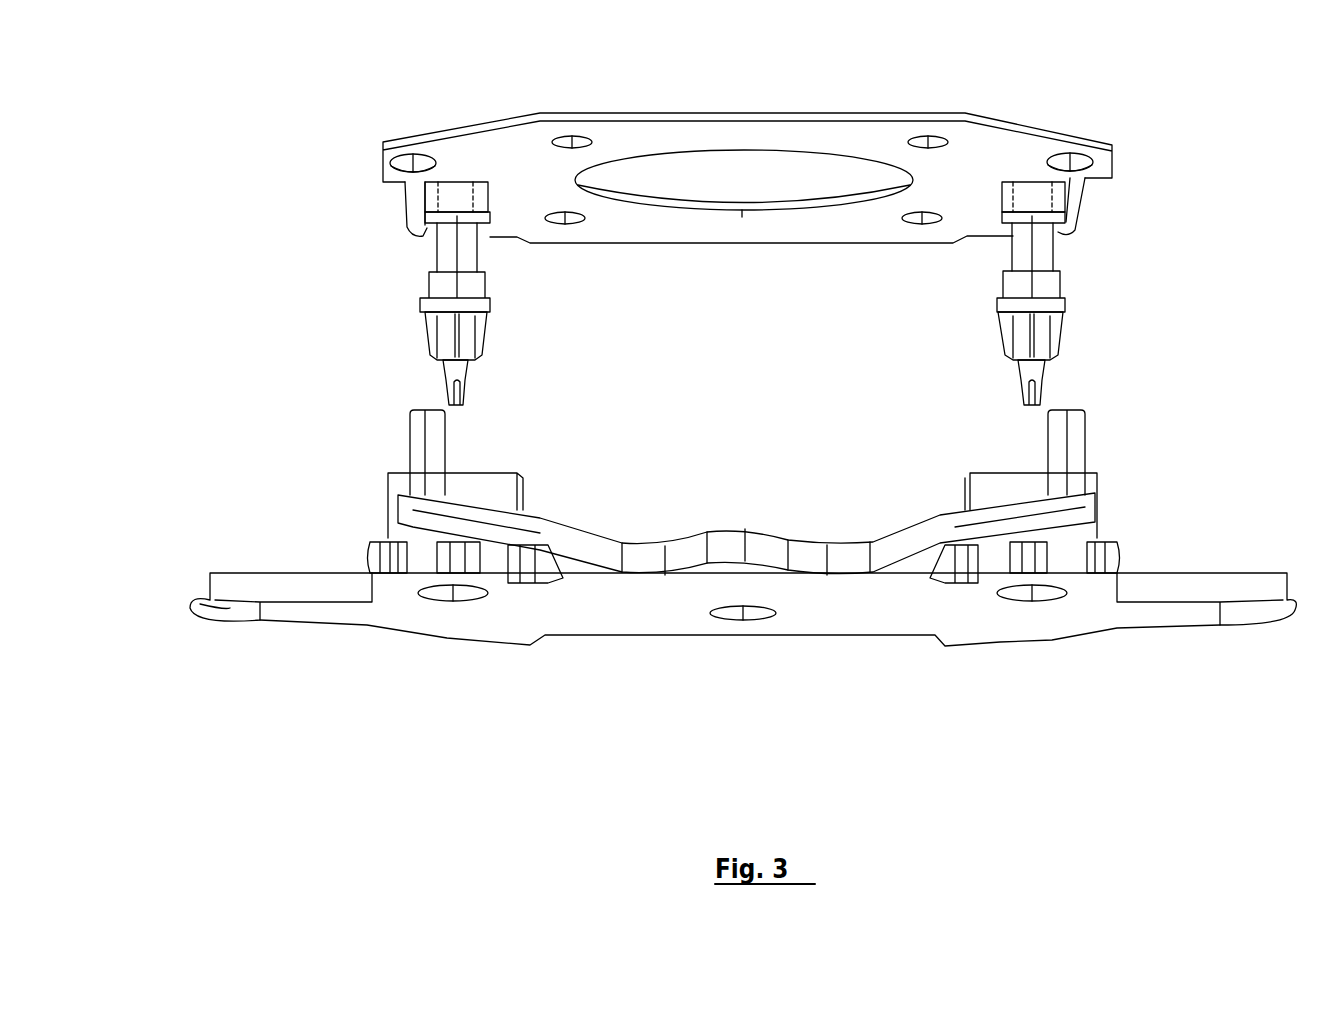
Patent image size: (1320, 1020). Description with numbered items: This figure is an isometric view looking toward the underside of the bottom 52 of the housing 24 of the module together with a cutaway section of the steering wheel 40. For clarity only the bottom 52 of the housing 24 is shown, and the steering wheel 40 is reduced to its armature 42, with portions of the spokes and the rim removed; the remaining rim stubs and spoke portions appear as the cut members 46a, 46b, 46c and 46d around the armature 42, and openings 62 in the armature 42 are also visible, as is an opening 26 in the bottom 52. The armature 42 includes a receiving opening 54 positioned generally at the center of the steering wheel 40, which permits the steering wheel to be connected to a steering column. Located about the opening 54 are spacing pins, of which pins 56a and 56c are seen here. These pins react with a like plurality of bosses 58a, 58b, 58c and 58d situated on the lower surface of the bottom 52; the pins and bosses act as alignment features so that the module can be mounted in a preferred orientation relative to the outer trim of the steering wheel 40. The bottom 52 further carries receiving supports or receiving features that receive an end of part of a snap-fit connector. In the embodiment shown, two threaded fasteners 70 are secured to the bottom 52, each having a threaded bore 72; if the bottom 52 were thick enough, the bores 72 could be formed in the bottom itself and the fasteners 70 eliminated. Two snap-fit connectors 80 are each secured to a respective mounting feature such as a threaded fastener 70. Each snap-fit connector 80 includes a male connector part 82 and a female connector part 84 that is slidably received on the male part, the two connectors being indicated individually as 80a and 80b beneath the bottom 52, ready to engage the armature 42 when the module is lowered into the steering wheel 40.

The housing 24 is at (1085, 122).
The oval aperture 26 is at (652, 210).
The steering wheel 40 is at (743, 548).
The armature 42 is at (600, 610).
The curved bar 46a is at (540, 530).
The left arm 46b is at (290, 627).
The right arm 46c is at (1172, 612).
The curved bar right portion 46d is at (968, 524).
The bottom 52 is at (980, 135).
The receiving opening 54 is at (733, 614).
The spacing pin 56a is at (418, 430).
The spacing pin 56c is at (1078, 439).
The boss 58a is at (398, 157).
The boss 58b is at (410, 231).
The boss 58c is at (1077, 168).
The boss 58d is at (1062, 233).
The slot 62 is at (445, 600).
The threaded fastener 70 is at (462, 186).
The threaded bore 72 is at (468, 205).
The snap-fit connector 80 is at (769, 310).
The pin collar 80a is at (493, 338).
The pin collar 80b is at (997, 314).
The male connector part 82 is at (470, 263).
The female connector part 84 is at (483, 346).